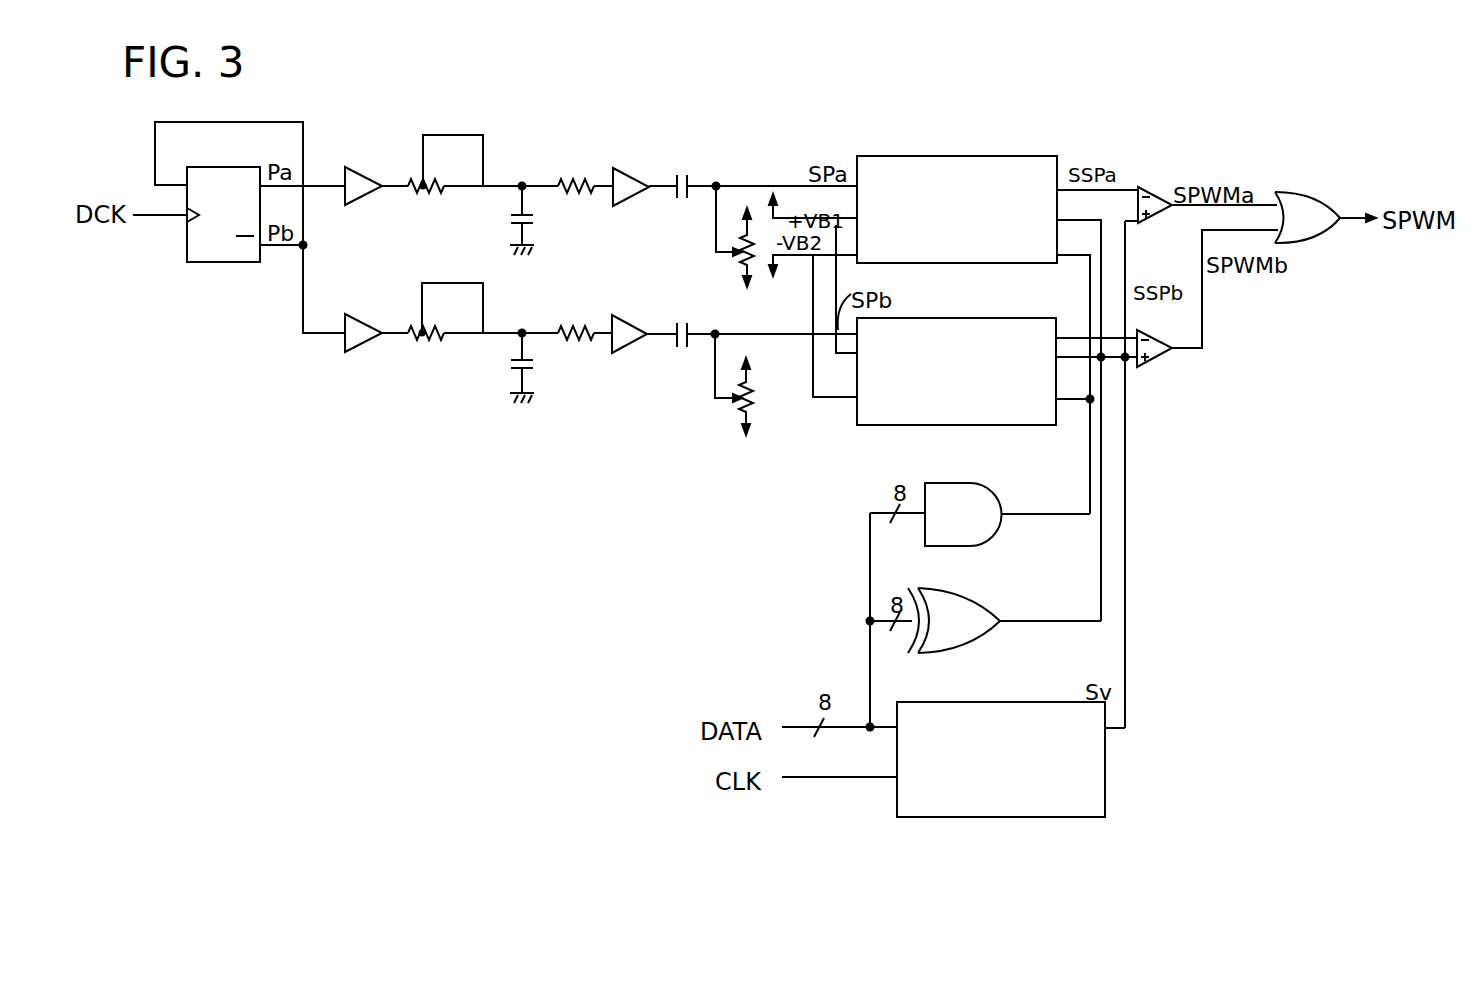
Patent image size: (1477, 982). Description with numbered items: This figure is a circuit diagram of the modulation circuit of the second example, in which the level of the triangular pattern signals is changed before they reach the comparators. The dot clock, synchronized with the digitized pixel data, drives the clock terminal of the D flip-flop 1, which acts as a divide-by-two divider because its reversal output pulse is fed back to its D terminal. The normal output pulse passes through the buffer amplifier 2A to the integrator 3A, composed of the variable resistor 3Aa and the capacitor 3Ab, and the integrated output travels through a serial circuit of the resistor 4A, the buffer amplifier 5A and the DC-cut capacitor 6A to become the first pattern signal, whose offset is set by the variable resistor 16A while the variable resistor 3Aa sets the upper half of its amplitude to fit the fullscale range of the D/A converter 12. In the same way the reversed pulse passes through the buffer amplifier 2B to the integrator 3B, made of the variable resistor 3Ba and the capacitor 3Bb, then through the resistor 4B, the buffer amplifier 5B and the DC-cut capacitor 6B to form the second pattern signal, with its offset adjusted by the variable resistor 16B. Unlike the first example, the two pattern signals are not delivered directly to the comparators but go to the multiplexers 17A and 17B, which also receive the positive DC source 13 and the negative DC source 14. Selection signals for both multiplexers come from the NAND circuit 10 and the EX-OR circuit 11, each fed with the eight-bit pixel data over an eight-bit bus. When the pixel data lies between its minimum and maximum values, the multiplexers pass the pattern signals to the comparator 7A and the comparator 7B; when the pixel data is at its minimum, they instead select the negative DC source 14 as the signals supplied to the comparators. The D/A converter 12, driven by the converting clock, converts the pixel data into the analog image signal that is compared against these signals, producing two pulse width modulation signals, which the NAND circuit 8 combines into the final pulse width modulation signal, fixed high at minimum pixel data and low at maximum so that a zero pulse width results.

The D flip-flop 1 is at (225, 262).
The buffer amplifier 2A is at (352, 203).
The buffer amplifier 2B is at (345, 350).
The integrator 3A is at (488, 128).
The variable resistor 3Aa is at (423, 197).
The capacitor 3Ab is at (535, 219).
The integrator 3B is at (417, 283).
The variable resistor 3Ba is at (422, 344).
The capacitor 3Bb is at (538, 364).
The resistor 4A is at (575, 180).
The resistor 4B is at (575, 326).
The buffer amplifier 5A is at (630, 168).
The buffer amplifier 5B is at (628, 316).
The DC-cut capacitor 6A is at (685, 174).
The DC-cut capacitor 6B is at (684, 322).
The comparator 7A is at (1156, 186).
The comparator 7B is at (1155, 339).
The NAND circuit 8 is at (1322, 236).
The NAND circuit 10 is at (990, 487).
The EX-OR circuit 11 is at (975, 597).
The D/A converter 12 is at (985, 818).
The DC source +VB1 13 is at (774, 186).
The DC source -VB2 14 is at (776, 278).
The variable resistor 16A is at (738, 282).
The variable resistor 16B is at (740, 400).
The multiplexer 17A is at (928, 156).
The multiplexer 17B is at (980, 318).